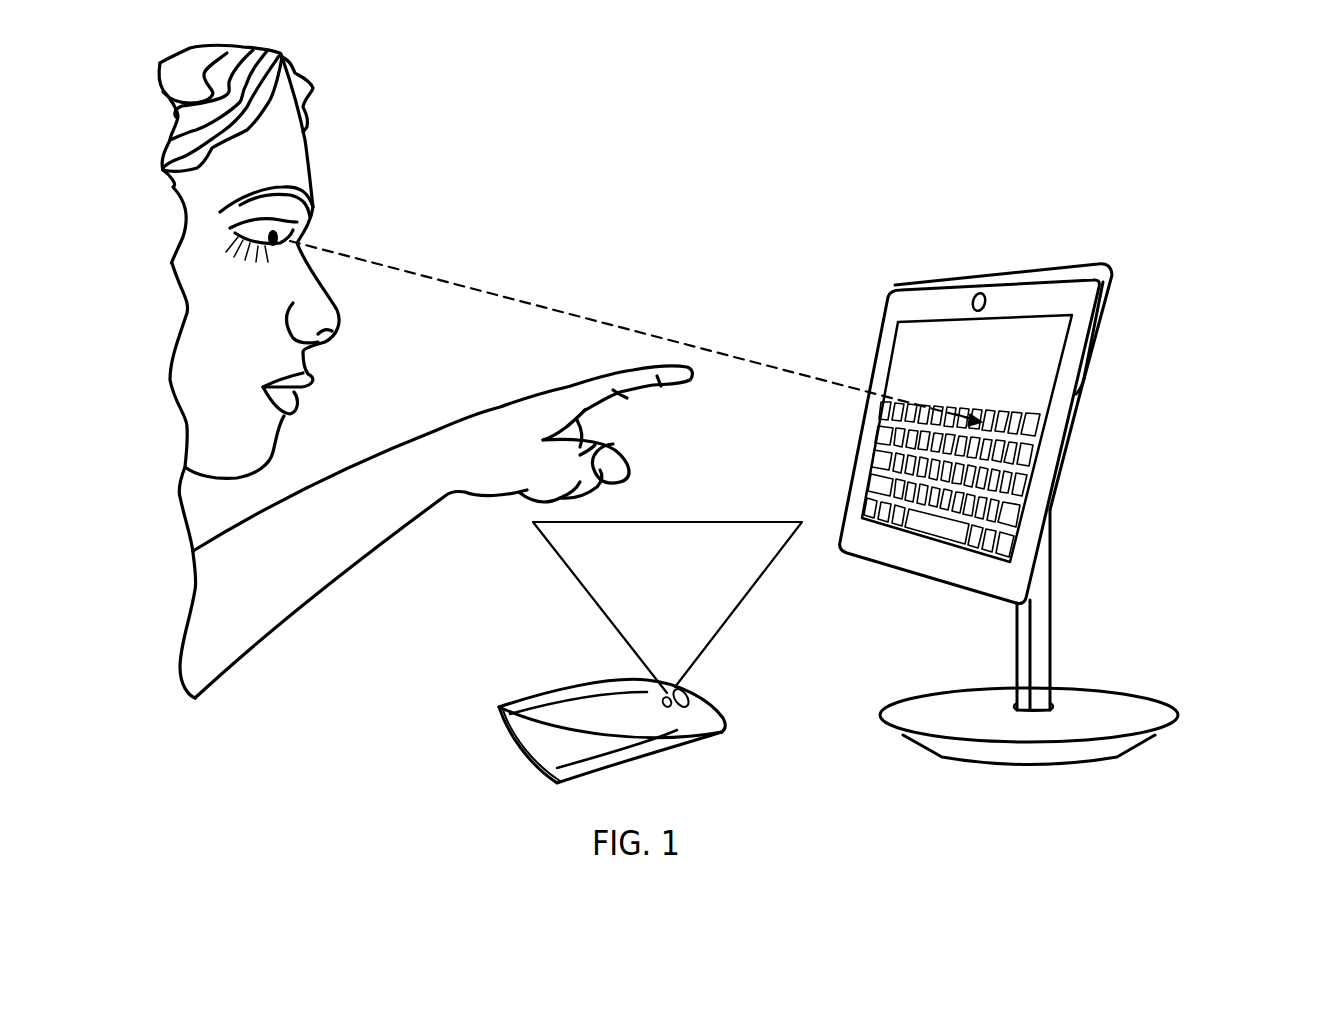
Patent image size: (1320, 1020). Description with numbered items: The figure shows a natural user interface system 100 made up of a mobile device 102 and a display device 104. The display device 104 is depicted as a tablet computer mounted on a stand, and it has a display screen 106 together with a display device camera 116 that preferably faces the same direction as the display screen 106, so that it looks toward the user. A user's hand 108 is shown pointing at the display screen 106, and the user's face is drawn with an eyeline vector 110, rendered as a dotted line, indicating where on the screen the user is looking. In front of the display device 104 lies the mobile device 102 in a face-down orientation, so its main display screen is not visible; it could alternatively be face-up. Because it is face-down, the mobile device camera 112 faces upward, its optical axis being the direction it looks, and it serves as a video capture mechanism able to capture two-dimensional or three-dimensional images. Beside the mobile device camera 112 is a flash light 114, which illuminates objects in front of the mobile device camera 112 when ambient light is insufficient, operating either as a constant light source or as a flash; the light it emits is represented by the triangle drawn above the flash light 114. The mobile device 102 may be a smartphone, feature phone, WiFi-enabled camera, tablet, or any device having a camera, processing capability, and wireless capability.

The natural user interface system 100 is at (775, 150).
The mobile device 102 is at (470, 752).
The display device 104 is at (1163, 310).
The display screen 106 is at (1020, 364).
The user's hand 108 is at (530, 418).
The eyeline vector 110 is at (513, 305).
The mobile device camera 112 is at (690, 697).
The flash light 114 is at (668, 707).
The display device camera 116 is at (977, 293).